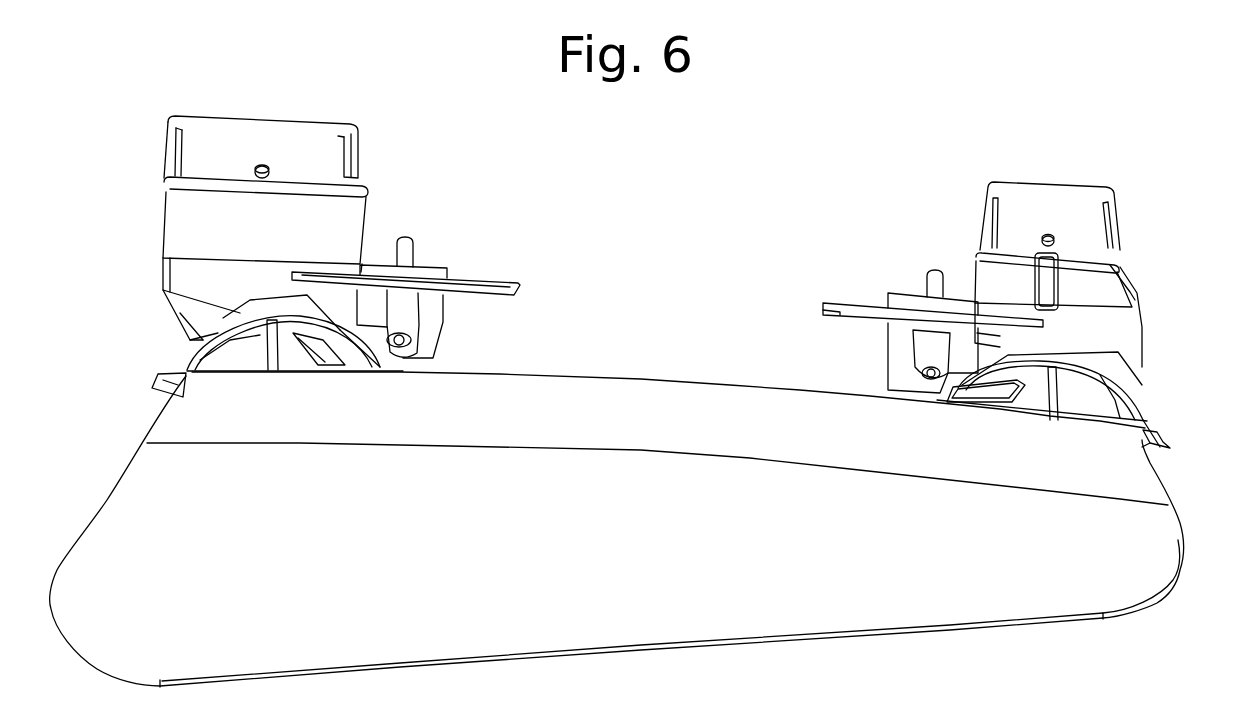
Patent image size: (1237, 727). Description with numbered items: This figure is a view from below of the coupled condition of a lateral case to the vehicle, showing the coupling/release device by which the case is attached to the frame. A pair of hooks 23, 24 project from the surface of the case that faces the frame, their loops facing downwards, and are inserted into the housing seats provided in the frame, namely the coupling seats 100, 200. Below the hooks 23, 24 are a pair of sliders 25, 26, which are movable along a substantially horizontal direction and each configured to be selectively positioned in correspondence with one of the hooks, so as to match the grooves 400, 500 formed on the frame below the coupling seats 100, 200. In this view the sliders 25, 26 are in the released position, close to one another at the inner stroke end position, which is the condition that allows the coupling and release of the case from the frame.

The hook 23 is at (337, 99).
The hook 24 is at (1060, 166).
The slider 25 is at (485, 258).
The slider 26 is at (862, 281).
The coupling seat 100 is at (190, 350).
The coupling seat 200 is at (1114, 394).
The groove 400 is at (351, 382).
The groove 500 is at (983, 413).